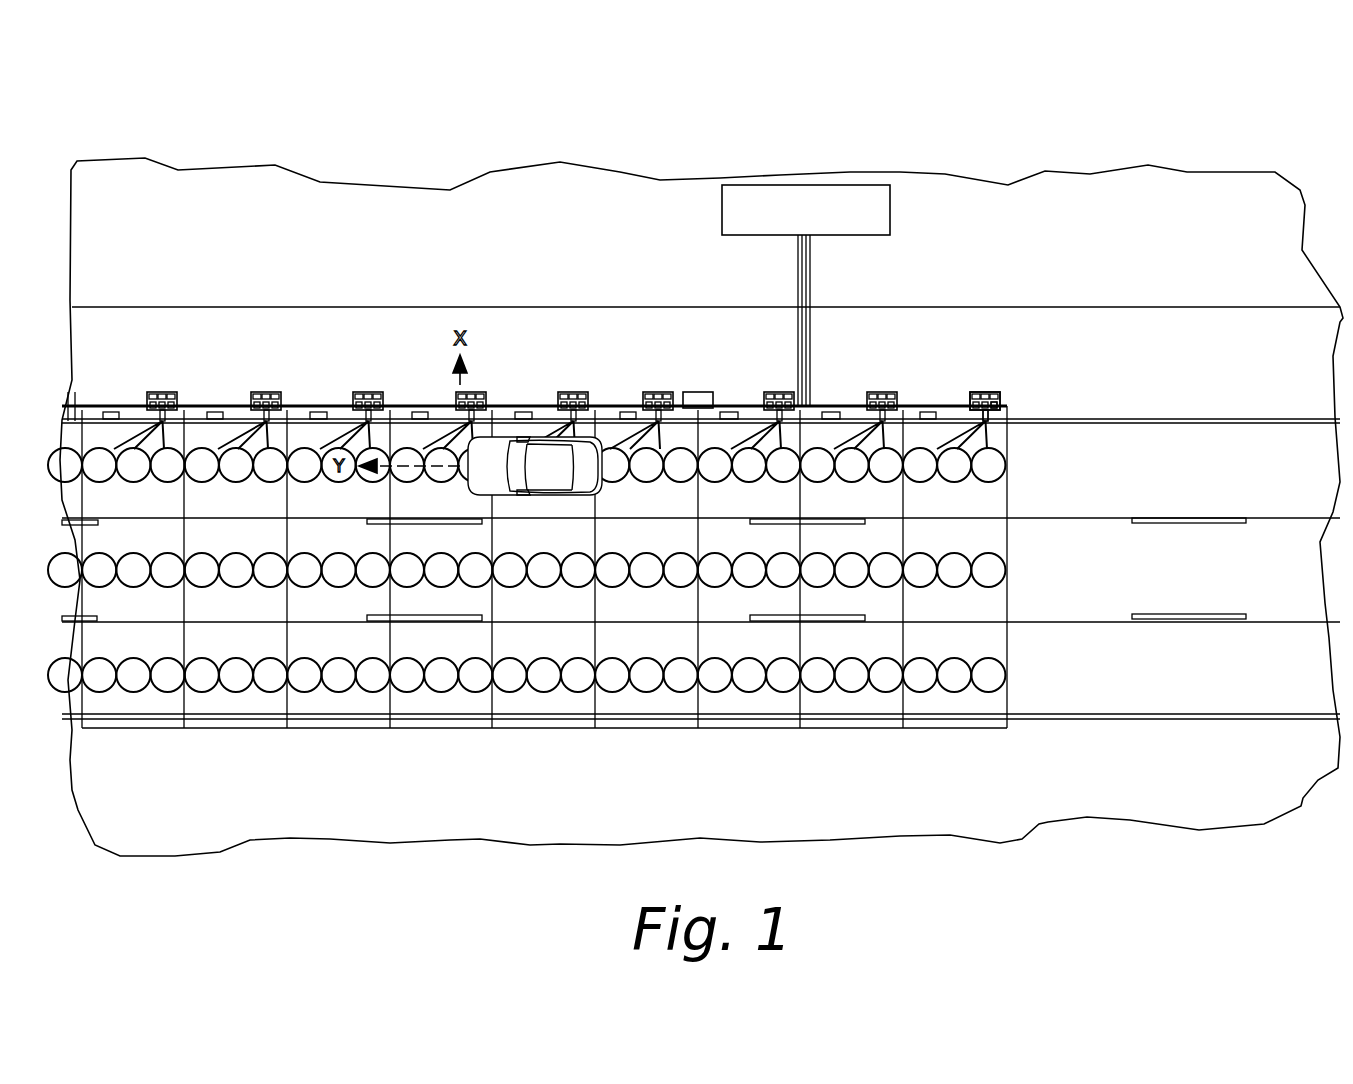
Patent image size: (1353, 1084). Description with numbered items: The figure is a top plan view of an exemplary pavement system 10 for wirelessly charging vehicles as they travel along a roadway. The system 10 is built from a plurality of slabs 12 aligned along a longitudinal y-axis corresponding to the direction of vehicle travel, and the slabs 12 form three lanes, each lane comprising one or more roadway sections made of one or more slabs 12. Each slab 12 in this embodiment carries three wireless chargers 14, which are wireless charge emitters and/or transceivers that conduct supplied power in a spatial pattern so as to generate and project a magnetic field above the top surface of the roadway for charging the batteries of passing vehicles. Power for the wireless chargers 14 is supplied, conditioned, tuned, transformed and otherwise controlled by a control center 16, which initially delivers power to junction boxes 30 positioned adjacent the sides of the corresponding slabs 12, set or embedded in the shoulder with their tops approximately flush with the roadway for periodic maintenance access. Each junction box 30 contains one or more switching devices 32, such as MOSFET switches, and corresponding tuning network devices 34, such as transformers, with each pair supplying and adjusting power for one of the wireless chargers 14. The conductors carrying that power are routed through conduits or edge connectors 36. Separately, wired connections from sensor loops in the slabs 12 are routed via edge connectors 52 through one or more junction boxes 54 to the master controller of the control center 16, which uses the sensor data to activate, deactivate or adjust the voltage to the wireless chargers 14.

The pavement system 10 is at (350, 116).
The slab 12 is at (1004, 497).
The wireless charger 14 is at (1008, 466).
The control center 16 is at (840, 186).
The junction box 30 is at (975, 394).
The switching device 32 is at (992, 400).
The tuning network device 34 is at (997, 404).
The edge connector 36 is at (1000, 420).
The edge connector 52 is at (930, 412).
The junction box 54 is at (690, 392).